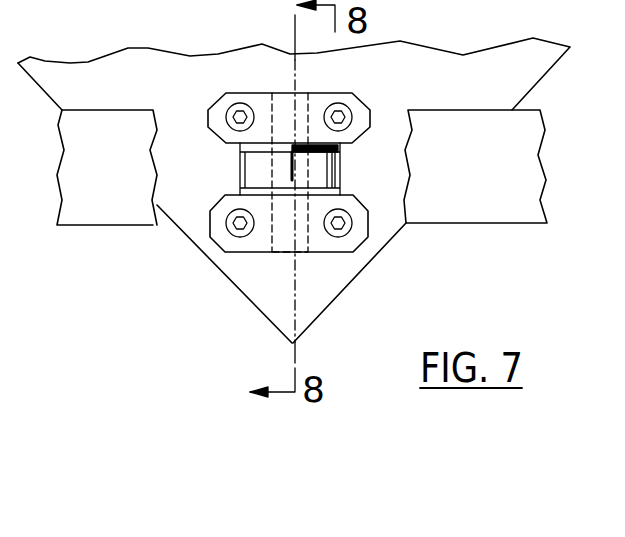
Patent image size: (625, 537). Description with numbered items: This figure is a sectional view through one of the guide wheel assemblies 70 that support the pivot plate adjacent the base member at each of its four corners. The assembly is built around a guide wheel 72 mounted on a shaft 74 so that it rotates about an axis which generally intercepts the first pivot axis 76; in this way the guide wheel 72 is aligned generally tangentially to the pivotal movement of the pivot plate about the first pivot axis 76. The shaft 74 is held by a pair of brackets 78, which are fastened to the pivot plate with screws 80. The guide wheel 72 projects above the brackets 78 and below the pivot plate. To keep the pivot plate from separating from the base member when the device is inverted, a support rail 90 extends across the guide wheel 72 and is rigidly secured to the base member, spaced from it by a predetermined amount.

The guide wheel assembly 70 is at (155, 250).
The guide wheel 72 is at (364, 172).
The shaft 74 is at (302, 254).
The first pivot axis 76 is at (295, 28).
The bracket 78 is at (222, 105).
The screw 80 is at (350, 108).
The support rail 90 is at (498, 212).